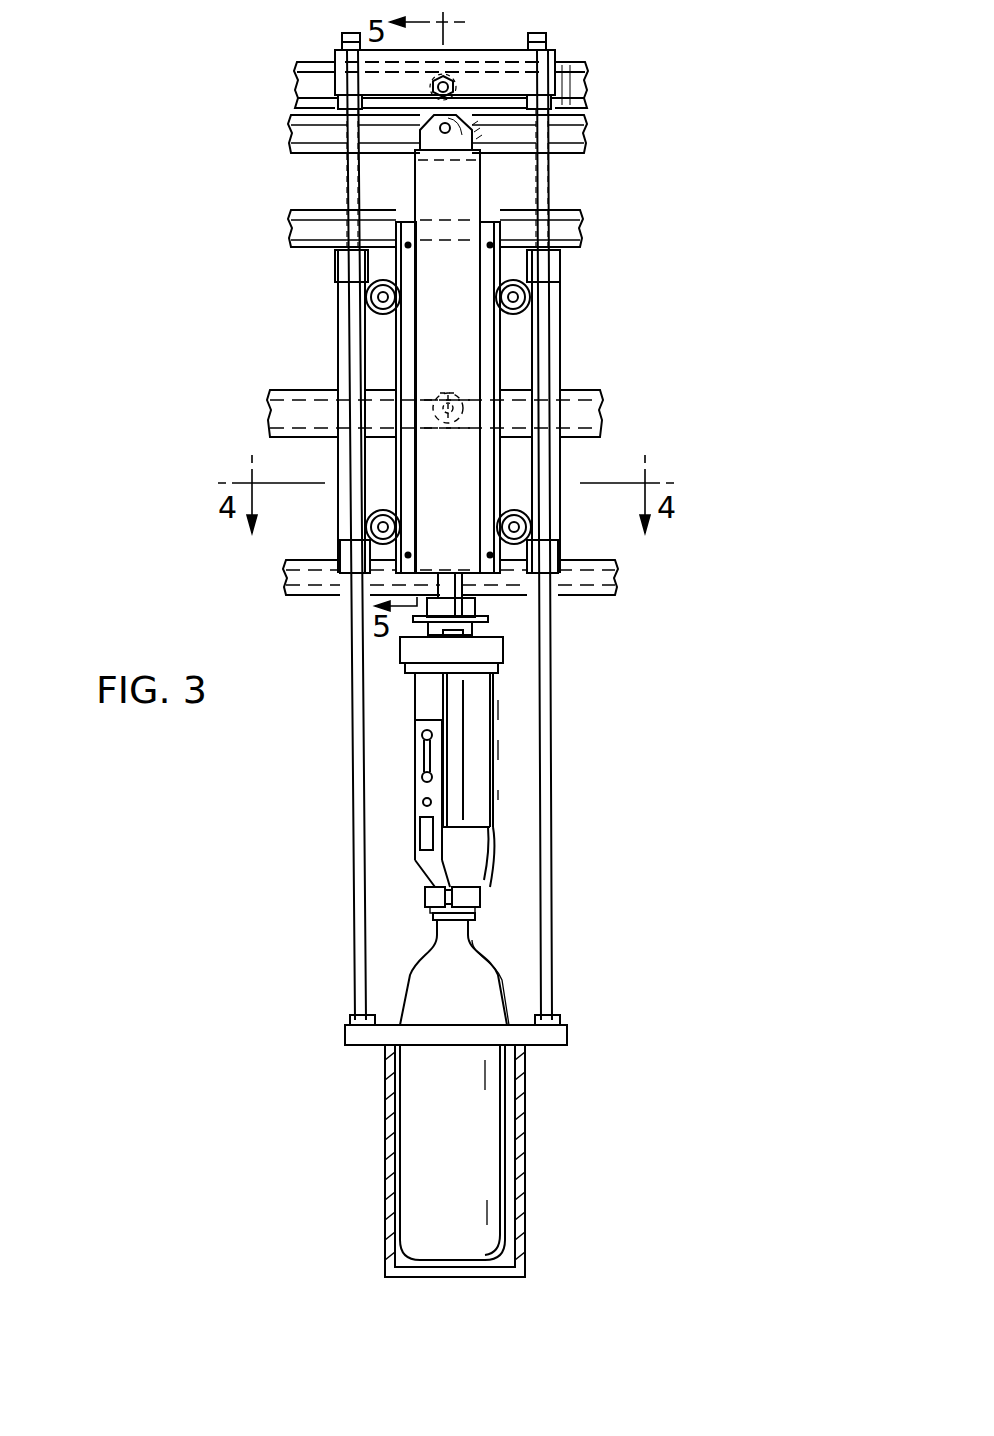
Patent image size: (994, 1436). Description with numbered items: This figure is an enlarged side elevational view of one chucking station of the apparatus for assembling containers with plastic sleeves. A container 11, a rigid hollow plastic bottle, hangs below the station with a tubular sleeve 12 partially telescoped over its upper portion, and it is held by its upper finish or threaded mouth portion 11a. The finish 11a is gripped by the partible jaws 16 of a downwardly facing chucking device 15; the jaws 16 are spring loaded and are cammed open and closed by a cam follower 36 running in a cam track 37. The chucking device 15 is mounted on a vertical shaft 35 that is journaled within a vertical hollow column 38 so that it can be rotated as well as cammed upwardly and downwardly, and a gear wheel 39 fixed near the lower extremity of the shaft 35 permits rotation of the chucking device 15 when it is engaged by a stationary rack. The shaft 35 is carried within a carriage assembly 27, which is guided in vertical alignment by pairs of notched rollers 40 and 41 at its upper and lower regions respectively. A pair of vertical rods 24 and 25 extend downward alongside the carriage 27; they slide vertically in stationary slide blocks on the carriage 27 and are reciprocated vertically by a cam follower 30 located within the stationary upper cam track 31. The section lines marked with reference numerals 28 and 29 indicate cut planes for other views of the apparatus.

The container 11 is at (510, 982).
The container finish 11a is at (472, 918).
The tubular sleeve 12 is at (525, 1139).
The chucking device 15 is at (512, 737).
The partible jaws 16 is at (435, 903).
The vertical rod 24 is at (352, 810).
The vertical rod 25 is at (554, 818).
The carriage assembly 27 is at (387, 328).
The pivot pin 28 is at (448, 395).
The middle cross rail 29 is at (303, 388).
The cam follower 30 is at (456, 86).
The upper cam track 31 is at (578, 78).
The vertical shaft 35 is at (470, 590).
The cam follower 36 is at (468, 126).
The cam track 37 is at (585, 133).
The vertical hollow column 38 is at (468, 358).
The gear wheel 39 is at (490, 620).
The notched rollers 40 is at (596, 295).
The notched rollers 41 is at (582, 517).